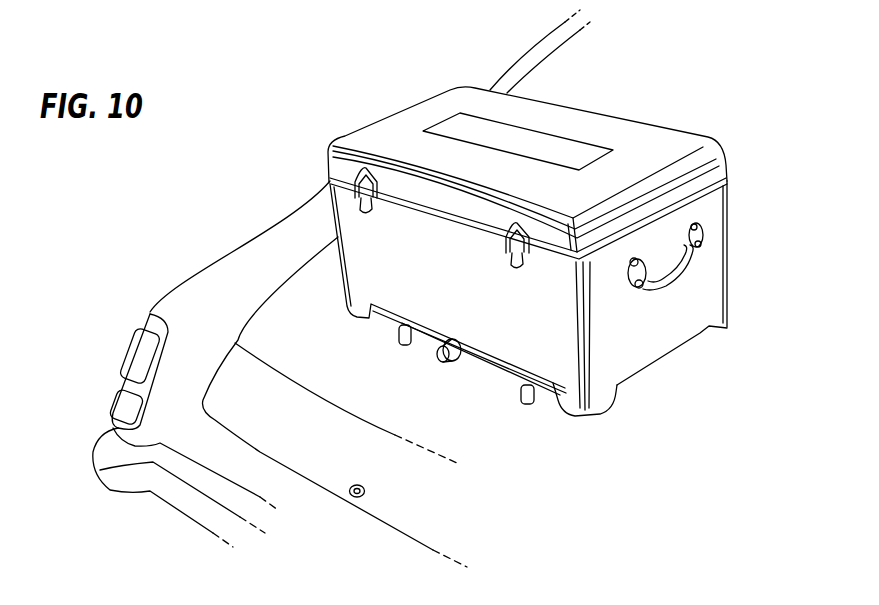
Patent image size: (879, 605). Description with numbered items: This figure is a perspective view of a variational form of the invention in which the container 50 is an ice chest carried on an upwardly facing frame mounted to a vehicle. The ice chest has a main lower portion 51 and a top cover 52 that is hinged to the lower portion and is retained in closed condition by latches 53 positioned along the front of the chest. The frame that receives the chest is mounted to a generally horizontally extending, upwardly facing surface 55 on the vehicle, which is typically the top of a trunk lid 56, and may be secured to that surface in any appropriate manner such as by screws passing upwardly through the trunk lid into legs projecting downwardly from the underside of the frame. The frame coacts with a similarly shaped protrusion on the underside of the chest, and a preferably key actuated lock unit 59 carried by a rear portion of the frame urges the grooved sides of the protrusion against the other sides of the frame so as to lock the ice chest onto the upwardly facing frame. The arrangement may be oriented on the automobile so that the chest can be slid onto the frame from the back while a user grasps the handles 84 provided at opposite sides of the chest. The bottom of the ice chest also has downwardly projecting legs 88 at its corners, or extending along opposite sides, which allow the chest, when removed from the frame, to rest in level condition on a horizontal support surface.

The container 50 is at (342, 210).
The main lower portion 51 is at (663, 344).
The top cover 52 is at (667, 140).
The latches 53 is at (518, 250).
The upwardly facing surface 55 is at (479, 390).
The trunk lid 56 is at (303, 290).
The lock unit 59 is at (437, 357).
The handles 84 is at (700, 268).
The legs 88 is at (610, 399).